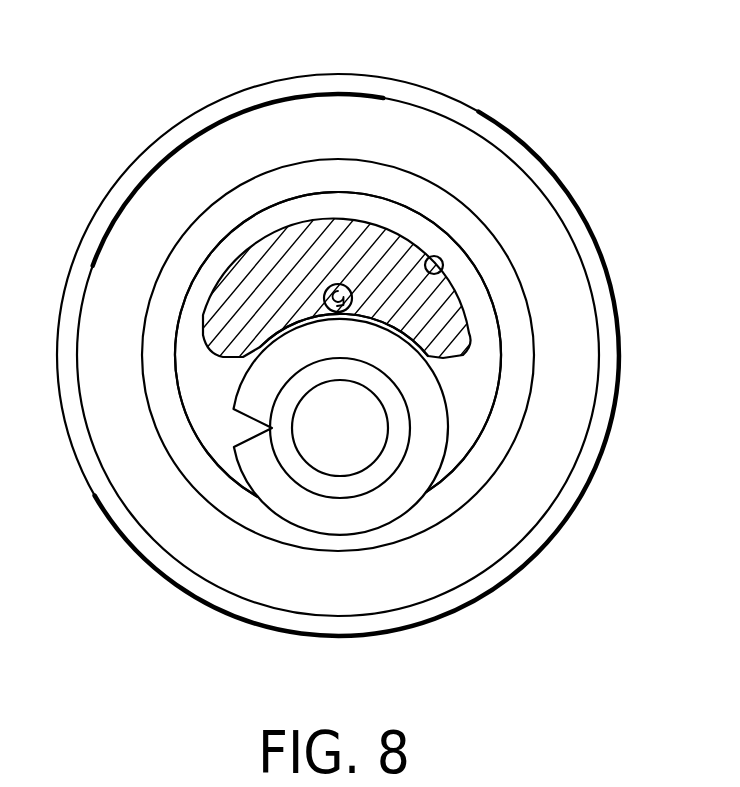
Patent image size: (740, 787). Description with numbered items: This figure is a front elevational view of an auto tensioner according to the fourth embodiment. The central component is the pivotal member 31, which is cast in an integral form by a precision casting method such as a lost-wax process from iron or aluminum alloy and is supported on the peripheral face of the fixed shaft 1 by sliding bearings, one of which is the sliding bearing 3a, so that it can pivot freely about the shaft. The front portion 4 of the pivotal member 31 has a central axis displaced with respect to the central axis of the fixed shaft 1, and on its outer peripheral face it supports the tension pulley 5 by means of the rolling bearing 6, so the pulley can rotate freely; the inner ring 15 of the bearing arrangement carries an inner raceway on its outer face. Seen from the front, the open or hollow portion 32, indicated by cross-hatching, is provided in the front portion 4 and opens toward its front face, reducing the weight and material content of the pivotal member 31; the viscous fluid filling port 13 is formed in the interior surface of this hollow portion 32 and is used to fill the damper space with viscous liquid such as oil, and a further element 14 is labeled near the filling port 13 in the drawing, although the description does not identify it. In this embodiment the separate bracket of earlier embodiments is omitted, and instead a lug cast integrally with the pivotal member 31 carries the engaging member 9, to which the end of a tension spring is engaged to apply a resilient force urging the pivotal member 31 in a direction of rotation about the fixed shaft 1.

The fixed shaft 1 is at (373, 483).
The sliding bearing 3a is at (432, 462).
The front portion 4 is at (500, 328).
The tension pulley 5 is at (602, 243).
The rolling bearing 6 is at (573, 363).
The engaging member 9 is at (290, 37).
The viscous fluid filling port 13 is at (347, 287).
The spring hook 14 is at (325, 300).
The inner ring 15 is at (517, 414).
The pivotal member 31 is at (473, 437).
The open or hollow portion 32 is at (443, 266).